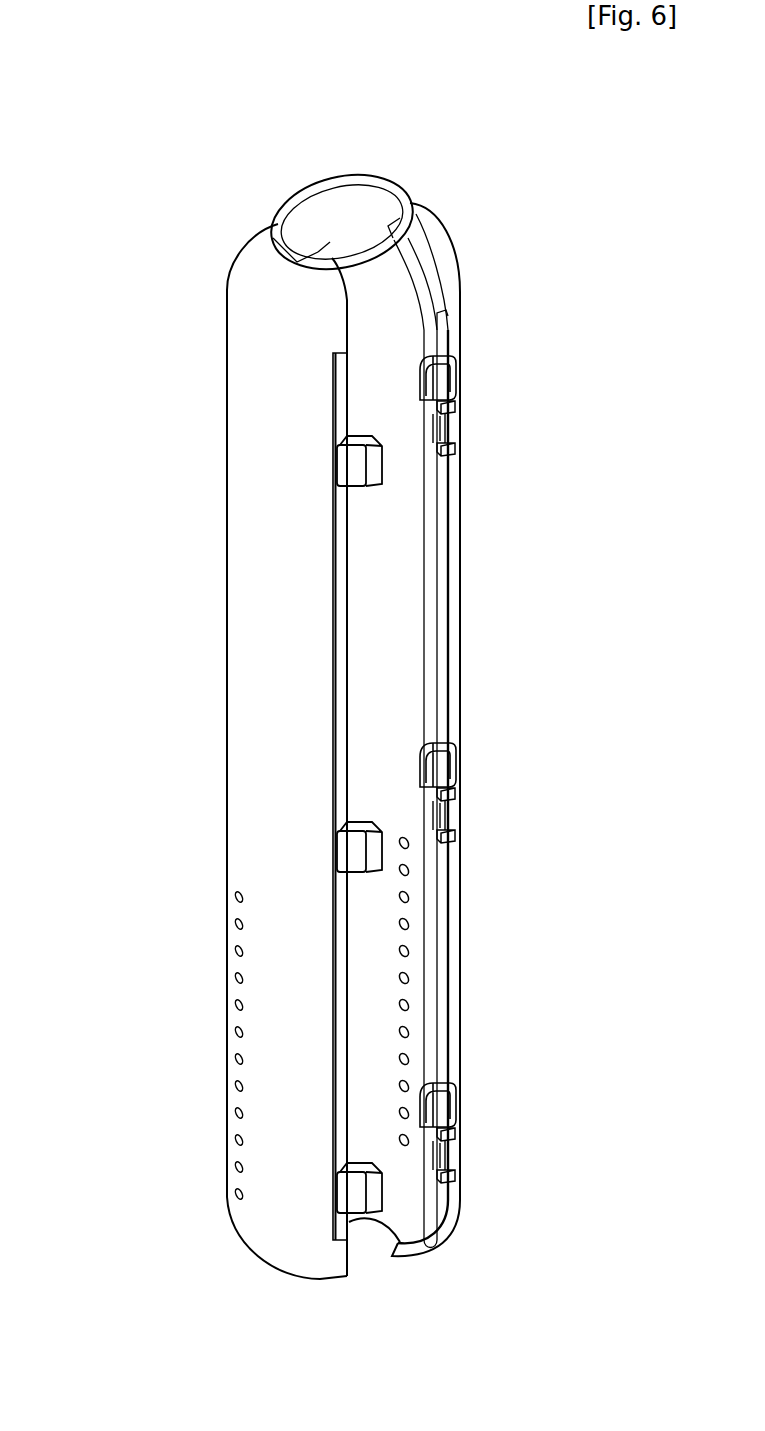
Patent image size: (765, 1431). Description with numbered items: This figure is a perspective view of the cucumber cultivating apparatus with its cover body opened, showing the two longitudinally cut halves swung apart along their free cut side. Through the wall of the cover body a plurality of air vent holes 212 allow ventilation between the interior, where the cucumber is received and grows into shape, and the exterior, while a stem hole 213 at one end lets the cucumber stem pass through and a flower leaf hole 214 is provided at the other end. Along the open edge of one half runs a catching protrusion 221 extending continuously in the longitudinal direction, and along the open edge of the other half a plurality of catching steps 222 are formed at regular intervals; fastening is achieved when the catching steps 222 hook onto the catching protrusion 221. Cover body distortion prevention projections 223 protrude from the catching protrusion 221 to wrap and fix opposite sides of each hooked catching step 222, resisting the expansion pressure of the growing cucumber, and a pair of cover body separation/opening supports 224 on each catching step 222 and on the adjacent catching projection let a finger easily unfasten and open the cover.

The air vent holes 212 is at (236, 1005).
The stem hole 213 is at (377, 197).
The flower leaf hole 214 is at (383, 1226).
The catching protrusion 221 is at (437, 429).
The catching steps 222 is at (338, 437).
The cover body distortion prevention projections 223 is at (456, 406).
The cover body separation/opening supports 224 is at (336, 468).